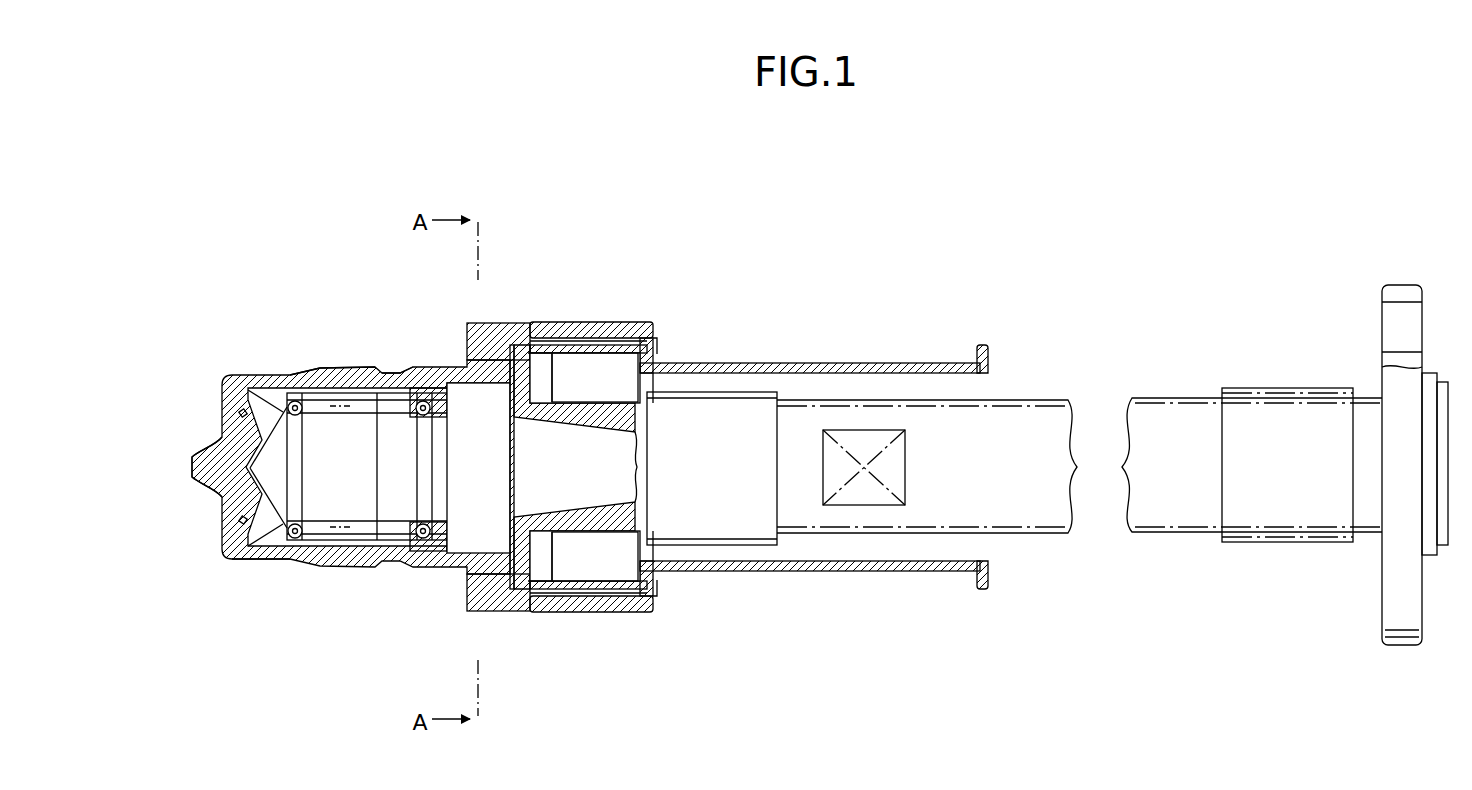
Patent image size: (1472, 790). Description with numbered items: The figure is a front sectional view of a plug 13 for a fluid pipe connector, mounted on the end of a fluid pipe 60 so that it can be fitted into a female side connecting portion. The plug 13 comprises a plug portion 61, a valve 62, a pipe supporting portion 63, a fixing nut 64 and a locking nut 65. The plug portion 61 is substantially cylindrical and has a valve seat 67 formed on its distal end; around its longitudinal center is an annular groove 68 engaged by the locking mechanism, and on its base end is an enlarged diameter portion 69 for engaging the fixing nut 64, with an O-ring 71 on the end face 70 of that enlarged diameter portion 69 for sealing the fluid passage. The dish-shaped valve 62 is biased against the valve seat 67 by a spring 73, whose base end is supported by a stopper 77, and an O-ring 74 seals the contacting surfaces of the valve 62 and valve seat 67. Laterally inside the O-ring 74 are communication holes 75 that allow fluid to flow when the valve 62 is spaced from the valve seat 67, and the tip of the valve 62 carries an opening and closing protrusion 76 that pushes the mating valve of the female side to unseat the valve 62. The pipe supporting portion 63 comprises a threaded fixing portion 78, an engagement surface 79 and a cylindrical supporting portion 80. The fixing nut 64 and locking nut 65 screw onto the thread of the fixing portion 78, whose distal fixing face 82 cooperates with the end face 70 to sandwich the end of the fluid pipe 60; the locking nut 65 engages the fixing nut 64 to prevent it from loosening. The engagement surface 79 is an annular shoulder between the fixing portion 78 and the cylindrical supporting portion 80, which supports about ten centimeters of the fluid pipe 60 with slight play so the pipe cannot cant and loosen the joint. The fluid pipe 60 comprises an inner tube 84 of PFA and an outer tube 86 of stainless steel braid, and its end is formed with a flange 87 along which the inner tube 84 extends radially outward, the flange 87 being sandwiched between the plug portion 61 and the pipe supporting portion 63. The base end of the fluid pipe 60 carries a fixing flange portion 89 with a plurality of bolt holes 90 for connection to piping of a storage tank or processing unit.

The plug 13 is at (810, 222).
The fluid pipe 60 is at (1038, 395).
The plug portion 61 is at (344, 362).
The valve 62 is at (210, 437).
The pipe supporting portion 63 is at (878, 580).
The fixing nut 64 is at (563, 318).
The locking nut 65 is at (627, 318).
The valve seat 67 is at (225, 545).
The annular groove 68 is at (365, 368).
The enlarged diameter portion 69 is at (475, 615).
The end face 70 is at (527, 325).
The O-ring 71 is at (500, 383).
The spring 73 is at (312, 542).
The O-ring 74 is at (245, 410).
The communication holes 75 is at (300, 400).
The opening and closing protrusion 76 is at (191, 464).
The stopper 77 is at (420, 385).
The fixing portion 78 is at (595, 615).
The engagement surface 79 is at (657, 594).
The cylindrical supporting portion 80 is at (797, 575).
The fixing face 82 is at (513, 615).
The inner tube 84 is at (548, 500).
The outer tube 86 is at (1162, 410).
The flange 87 is at (527, 615).
The fixing flange portion 89 is at (1407, 283).
The bolt holes 90 is at (1393, 318).